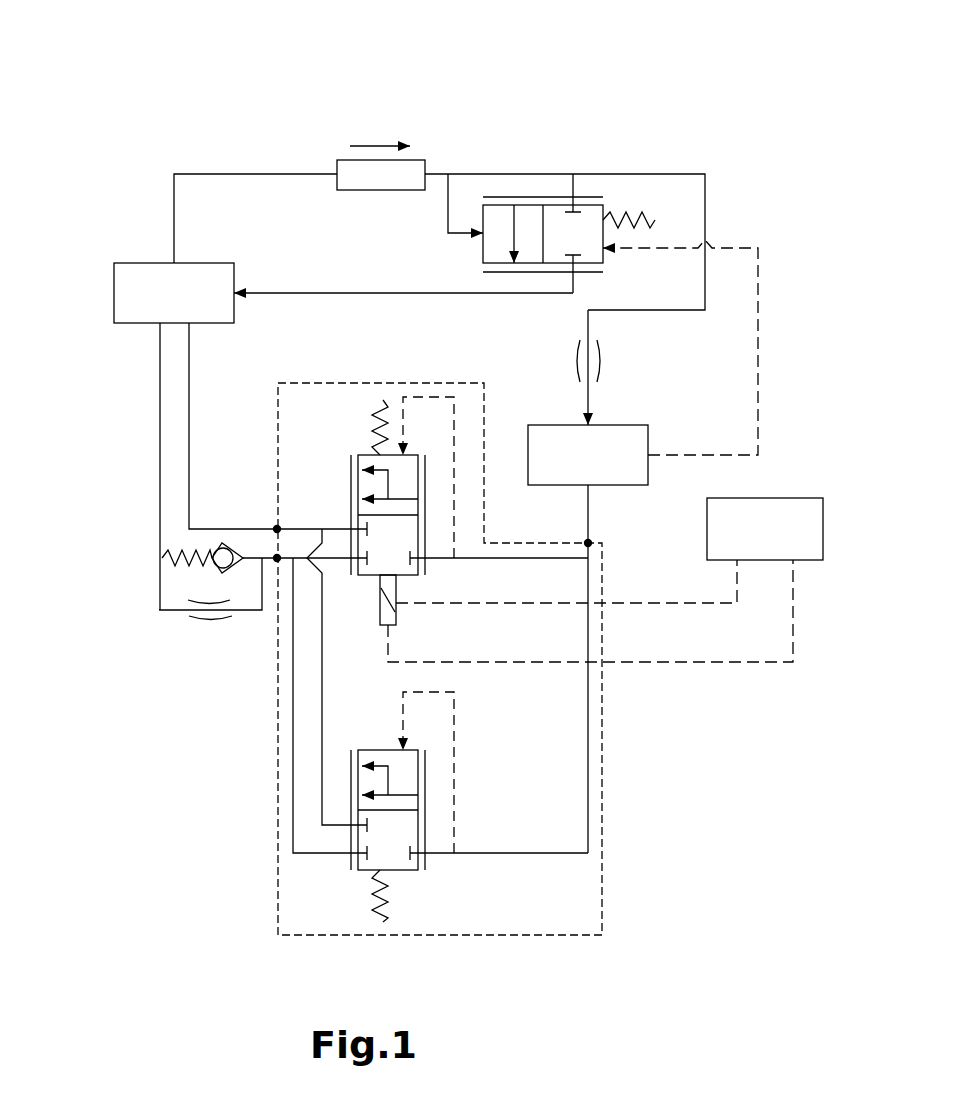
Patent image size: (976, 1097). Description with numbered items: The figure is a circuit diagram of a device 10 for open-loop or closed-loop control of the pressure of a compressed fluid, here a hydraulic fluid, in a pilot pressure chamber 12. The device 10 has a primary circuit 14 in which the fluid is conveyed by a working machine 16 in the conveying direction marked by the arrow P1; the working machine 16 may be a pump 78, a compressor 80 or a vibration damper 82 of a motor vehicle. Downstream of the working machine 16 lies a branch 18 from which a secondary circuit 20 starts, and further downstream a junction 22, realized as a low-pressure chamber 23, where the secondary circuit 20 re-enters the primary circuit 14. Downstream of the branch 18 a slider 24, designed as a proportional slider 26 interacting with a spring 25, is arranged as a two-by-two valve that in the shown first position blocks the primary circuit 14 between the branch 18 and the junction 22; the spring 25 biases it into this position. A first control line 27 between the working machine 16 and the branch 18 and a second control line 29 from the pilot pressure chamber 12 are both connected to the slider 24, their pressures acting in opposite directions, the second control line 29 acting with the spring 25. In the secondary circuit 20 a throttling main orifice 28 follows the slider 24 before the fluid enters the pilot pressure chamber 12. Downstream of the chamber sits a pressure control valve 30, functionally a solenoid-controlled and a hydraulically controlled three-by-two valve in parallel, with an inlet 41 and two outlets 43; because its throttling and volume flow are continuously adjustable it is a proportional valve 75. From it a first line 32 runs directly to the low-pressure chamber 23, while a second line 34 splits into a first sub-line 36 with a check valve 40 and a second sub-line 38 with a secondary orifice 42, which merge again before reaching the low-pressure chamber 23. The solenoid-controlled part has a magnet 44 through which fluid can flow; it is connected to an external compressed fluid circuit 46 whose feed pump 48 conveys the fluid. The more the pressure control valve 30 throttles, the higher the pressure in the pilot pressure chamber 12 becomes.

The device 10 is at (105, 88).
The pilot pressure chamber 12 is at (571, 470).
The primary circuit 14 is at (282, 293).
The working machine 16 is at (399, 219).
The pump 78 is at (399, 219).
The compressor 80 is at (399, 219).
The vibration damper 82 is at (375, 192).
The conveying direction arrow P1 is at (382, 145).
The branch 18 is at (603, 174).
The secondary circuit 20 is at (588, 320).
The junction 22 is at (150, 237).
The low-pressure chamber 23 is at (157, 305).
The slider 24 is at (541, 200).
The proportional slider 26 is at (518, 205).
The spring 25 is at (632, 215).
The first control line 27 is at (450, 197).
The main orifice 28 is at (598, 358).
The second control line 29 is at (760, 302).
The pressure control valve 30 is at (517, 659).
The proportional valve 75 is at (605, 790).
The first line 32 is at (192, 375).
The second line 34 is at (158, 412).
The first sub-line 36 is at (221, 598).
The second sub-line 38 is at (180, 613).
The check valve 40 is at (200, 556).
The inlet 41 is at (600, 540).
The secondary orifice 42 is at (208, 622).
The outlets 43 is at (278, 552).
The magnet 44 is at (396, 608).
The external compressed fluid circuit 46 is at (752, 663).
The feed pump 48 is at (748, 545).